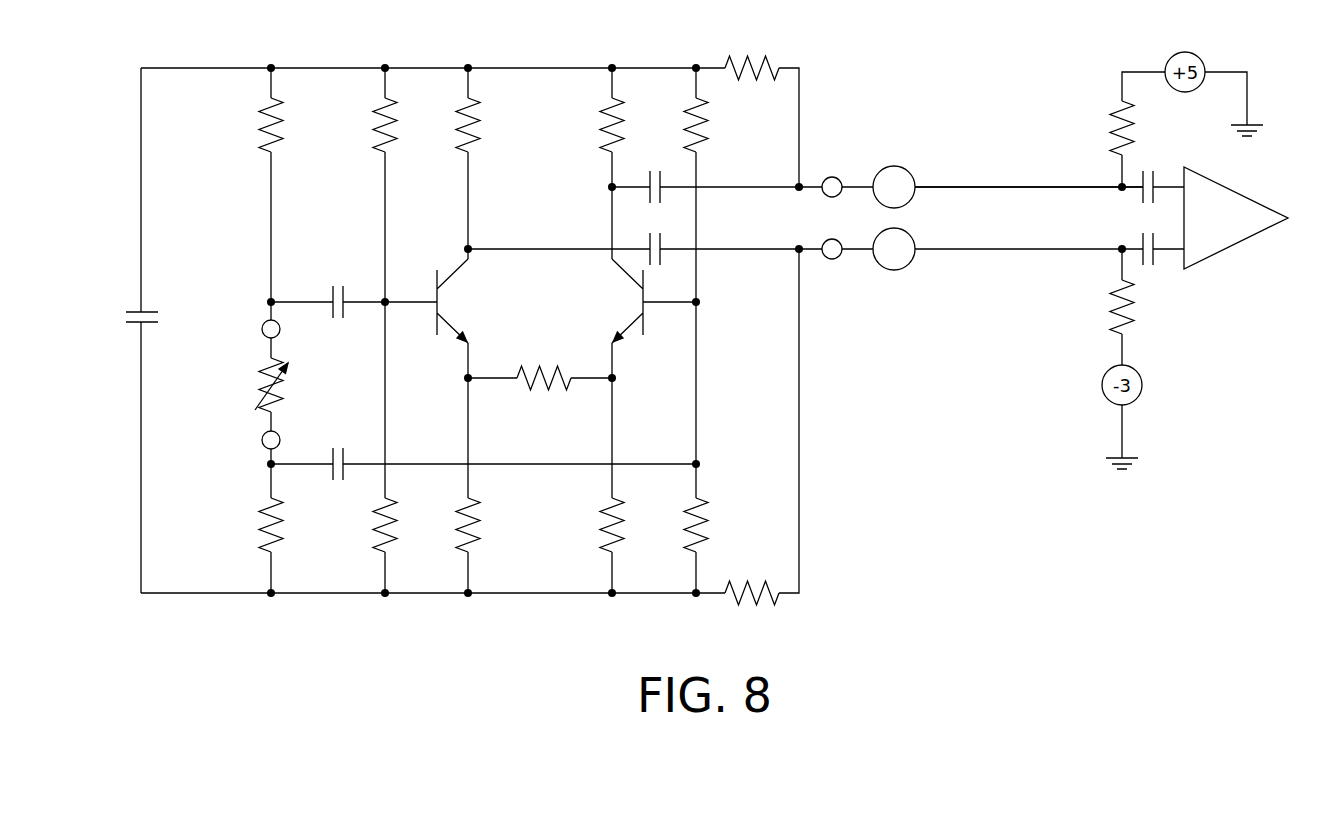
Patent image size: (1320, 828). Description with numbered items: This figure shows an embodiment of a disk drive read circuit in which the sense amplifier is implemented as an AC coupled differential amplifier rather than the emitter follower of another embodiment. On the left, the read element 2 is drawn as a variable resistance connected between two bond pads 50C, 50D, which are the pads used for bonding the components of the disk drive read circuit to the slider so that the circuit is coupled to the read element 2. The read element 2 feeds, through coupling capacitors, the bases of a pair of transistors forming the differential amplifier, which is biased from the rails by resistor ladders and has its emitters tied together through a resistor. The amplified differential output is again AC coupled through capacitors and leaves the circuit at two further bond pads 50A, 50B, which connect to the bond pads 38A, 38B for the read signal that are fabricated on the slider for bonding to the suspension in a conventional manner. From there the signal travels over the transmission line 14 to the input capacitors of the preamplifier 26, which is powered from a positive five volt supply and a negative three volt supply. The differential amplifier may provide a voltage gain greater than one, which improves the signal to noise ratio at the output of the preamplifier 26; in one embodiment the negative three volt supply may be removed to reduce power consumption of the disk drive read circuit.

The read element 2 is at (252, 380).
The transmission line 14 is at (1027, 186).
The preamplifier 26 is at (1242, 246).
The bond pad 38A is at (906, 168).
The bond pad 38B is at (908, 267).
The bond pad 50A is at (834, 177).
The bond pad 50B is at (839, 256).
The bond pad 50C is at (262, 329).
The bond pad 50D is at (262, 440).